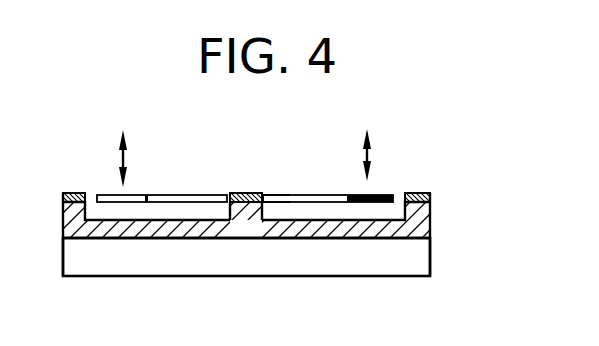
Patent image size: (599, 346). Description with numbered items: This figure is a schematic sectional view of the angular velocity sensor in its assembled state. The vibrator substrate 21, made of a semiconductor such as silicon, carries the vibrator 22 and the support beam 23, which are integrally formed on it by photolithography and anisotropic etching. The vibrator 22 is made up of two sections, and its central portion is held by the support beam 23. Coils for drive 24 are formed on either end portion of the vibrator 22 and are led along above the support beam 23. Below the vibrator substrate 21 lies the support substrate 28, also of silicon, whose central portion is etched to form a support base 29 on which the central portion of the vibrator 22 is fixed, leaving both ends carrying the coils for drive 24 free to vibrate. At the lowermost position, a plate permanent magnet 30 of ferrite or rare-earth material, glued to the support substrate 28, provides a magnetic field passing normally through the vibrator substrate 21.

The vibrator substrate 21 is at (428, 193).
The vibrator 22 is at (338, 169).
The support beam 23 is at (256, 193).
The coils for drive 24 is at (355, 196).
The support substrate 28 is at (431, 221).
The support base 29 is at (237, 214).
The permanent magnet 30 is at (431, 258).